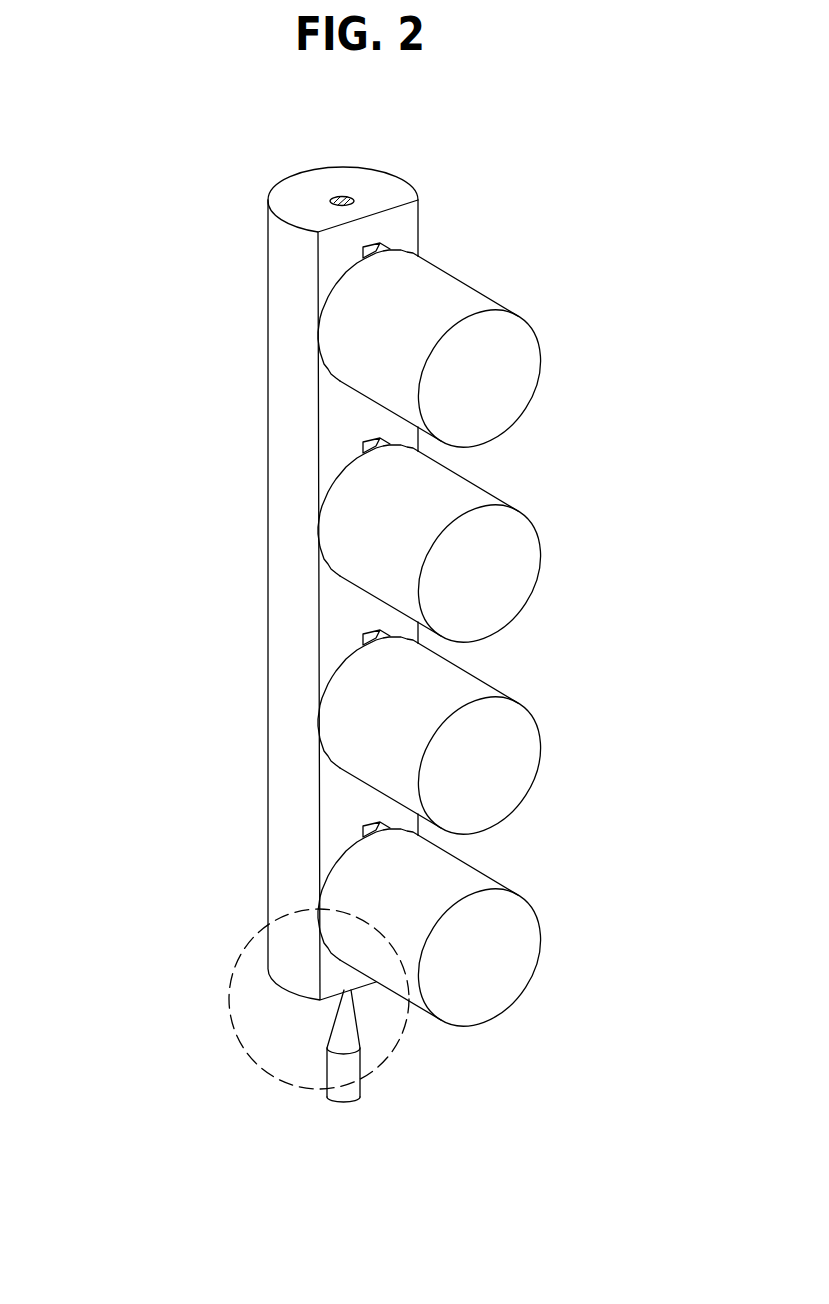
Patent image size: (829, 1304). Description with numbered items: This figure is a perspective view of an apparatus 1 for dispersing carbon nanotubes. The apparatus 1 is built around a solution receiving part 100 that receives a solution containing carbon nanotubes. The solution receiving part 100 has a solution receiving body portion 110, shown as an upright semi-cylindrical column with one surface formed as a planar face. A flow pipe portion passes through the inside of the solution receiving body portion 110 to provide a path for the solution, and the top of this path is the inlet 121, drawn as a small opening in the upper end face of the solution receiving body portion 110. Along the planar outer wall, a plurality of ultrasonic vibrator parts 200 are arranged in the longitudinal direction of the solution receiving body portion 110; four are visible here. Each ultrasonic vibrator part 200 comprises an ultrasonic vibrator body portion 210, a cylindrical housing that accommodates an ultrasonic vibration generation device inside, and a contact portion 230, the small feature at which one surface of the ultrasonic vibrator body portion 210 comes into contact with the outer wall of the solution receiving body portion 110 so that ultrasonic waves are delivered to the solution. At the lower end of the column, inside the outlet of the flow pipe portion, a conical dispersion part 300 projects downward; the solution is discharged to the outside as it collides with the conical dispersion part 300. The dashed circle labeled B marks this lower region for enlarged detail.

The apparatus for dispersing carbon nanotubes 1 is at (631, 98).
The solution receiving part 100 is at (182, 369).
The solution receiving body portion 110 is at (287, 457).
The inlet 121 is at (340, 196).
The ultrasonic vibrator part 200 is at (492, 186).
The ultrasonic vibrator body portion 210 is at (477, 303).
The contact portion 230 is at (382, 246).
The conical dispersion part 300 is at (337, 1068).
The detail region B is at (230, 1014).